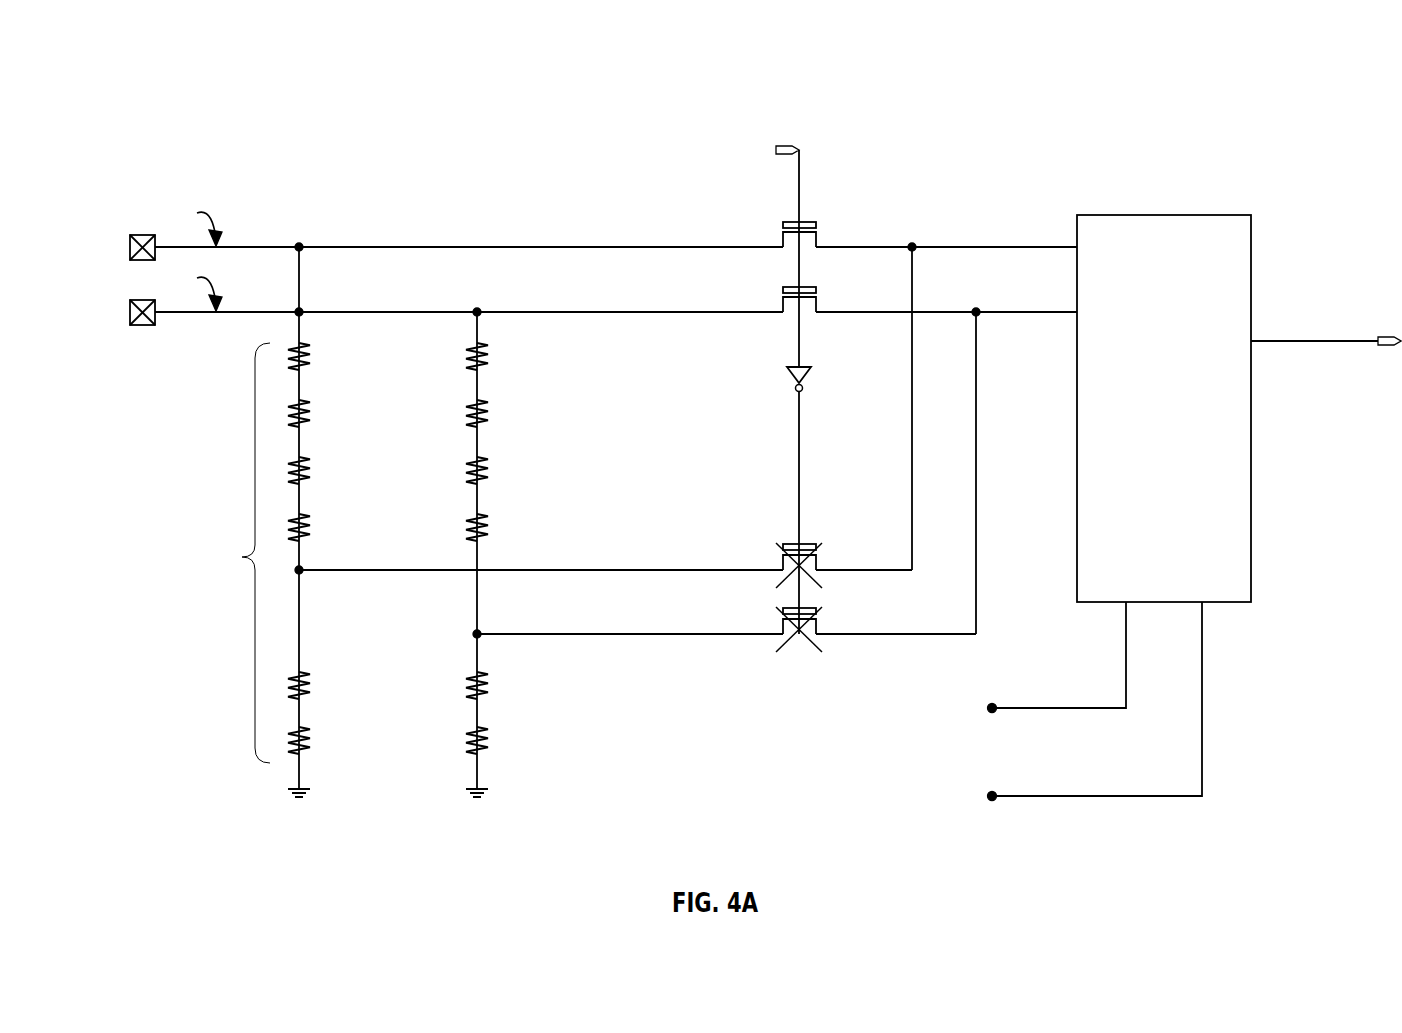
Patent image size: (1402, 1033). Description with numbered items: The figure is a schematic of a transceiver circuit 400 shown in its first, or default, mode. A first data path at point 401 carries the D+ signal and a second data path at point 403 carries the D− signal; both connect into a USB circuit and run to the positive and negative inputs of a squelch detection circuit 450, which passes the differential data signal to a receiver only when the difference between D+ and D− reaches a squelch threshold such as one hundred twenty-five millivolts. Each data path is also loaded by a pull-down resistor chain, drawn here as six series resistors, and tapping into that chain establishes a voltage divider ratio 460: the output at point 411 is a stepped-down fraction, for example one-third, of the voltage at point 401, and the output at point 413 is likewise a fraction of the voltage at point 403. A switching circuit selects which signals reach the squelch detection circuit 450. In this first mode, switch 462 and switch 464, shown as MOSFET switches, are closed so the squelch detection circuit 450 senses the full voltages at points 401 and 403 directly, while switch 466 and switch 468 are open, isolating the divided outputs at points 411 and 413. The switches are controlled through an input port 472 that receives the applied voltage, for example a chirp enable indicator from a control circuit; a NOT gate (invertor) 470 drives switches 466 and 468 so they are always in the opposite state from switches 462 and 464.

The transceiver circuit 400 is at (249, 102).
The first data path point 401 is at (130, 247).
The second data path point 403 is at (130, 312).
The voltage divider output point 411 is at (303, 569).
The voltage divider output point 413 is at (481, 633).
The squelch detection circuit 450 is at (1096, 508).
The voltage divider ratio 460 is at (346, 522).
The switch 462 is at (818, 240).
The switch 464 is at (818, 305).
The switch 466 is at (818, 563).
The switch 468 is at (818, 627).
The NOT gate (invertor) 470 is at (808, 381).
The input port 472 is at (776, 150).